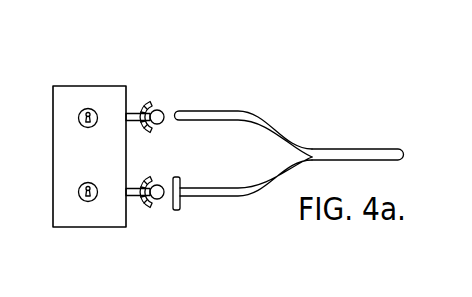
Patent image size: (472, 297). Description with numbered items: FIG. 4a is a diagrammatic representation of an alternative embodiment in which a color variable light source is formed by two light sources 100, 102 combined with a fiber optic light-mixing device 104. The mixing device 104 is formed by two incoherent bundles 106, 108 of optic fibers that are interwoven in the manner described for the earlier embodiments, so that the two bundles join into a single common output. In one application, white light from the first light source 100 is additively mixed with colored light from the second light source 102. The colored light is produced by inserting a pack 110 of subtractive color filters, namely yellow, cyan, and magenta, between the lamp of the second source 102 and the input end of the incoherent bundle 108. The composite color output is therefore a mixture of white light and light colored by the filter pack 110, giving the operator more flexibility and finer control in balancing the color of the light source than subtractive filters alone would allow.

The light source 100 is at (103, 80).
The light source 102 is at (138, 214).
The fiber optic light-mixing device 104 is at (288, 155).
The incoherent bundle 106 is at (213, 112).
The incoherent bundle 108 is at (240, 196).
The pack of subtractive color filters 110 is at (178, 211).